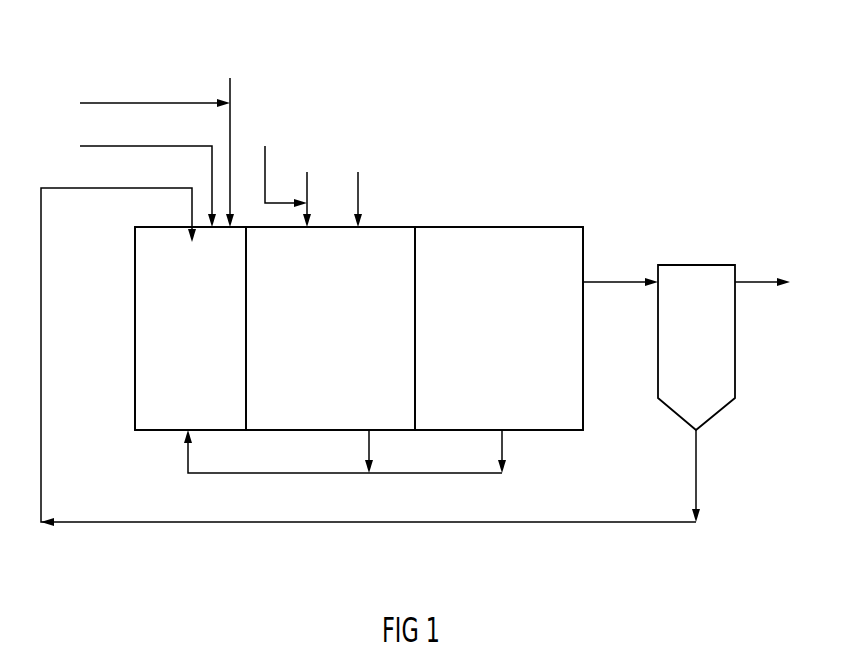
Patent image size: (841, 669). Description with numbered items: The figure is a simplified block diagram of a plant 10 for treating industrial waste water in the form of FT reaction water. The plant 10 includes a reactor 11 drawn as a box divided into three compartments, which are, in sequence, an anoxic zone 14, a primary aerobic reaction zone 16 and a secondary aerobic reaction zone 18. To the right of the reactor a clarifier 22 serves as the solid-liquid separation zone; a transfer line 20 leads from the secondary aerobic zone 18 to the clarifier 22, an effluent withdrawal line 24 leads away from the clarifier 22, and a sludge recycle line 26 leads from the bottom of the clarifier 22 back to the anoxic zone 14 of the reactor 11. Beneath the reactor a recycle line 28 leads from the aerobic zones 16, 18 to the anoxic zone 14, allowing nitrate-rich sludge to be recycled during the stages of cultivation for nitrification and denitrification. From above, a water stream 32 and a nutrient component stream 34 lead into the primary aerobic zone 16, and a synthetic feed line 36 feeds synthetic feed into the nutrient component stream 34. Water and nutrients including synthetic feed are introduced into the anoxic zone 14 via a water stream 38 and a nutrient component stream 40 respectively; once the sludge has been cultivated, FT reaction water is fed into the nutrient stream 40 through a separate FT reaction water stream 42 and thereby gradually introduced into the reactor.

The plant 10 is at (715, 82).
The reactor 11 is at (550, 188).
The anoxic zone 14 is at (208, 397).
The primary aerobic reaction zone 16 is at (340, 397).
The secondary aerobic reaction zone 18 is at (513, 397).
The transfer line 20 is at (620, 281).
The clarifier 22 is at (707, 347).
The effluent withdrawal line 24 is at (755, 281).
The sludge recycle line 26 is at (408, 523).
The recycle line 28 is at (327, 474).
The water stream 32 is at (358, 195).
The nutrient component stream 34 is at (307, 195).
The synthetic feed line 36 is at (265, 170).
The water stream 38 is at (148, 145).
The nutrient component stream 40 is at (231, 130).
The FT reaction water stream 42 is at (153, 102).